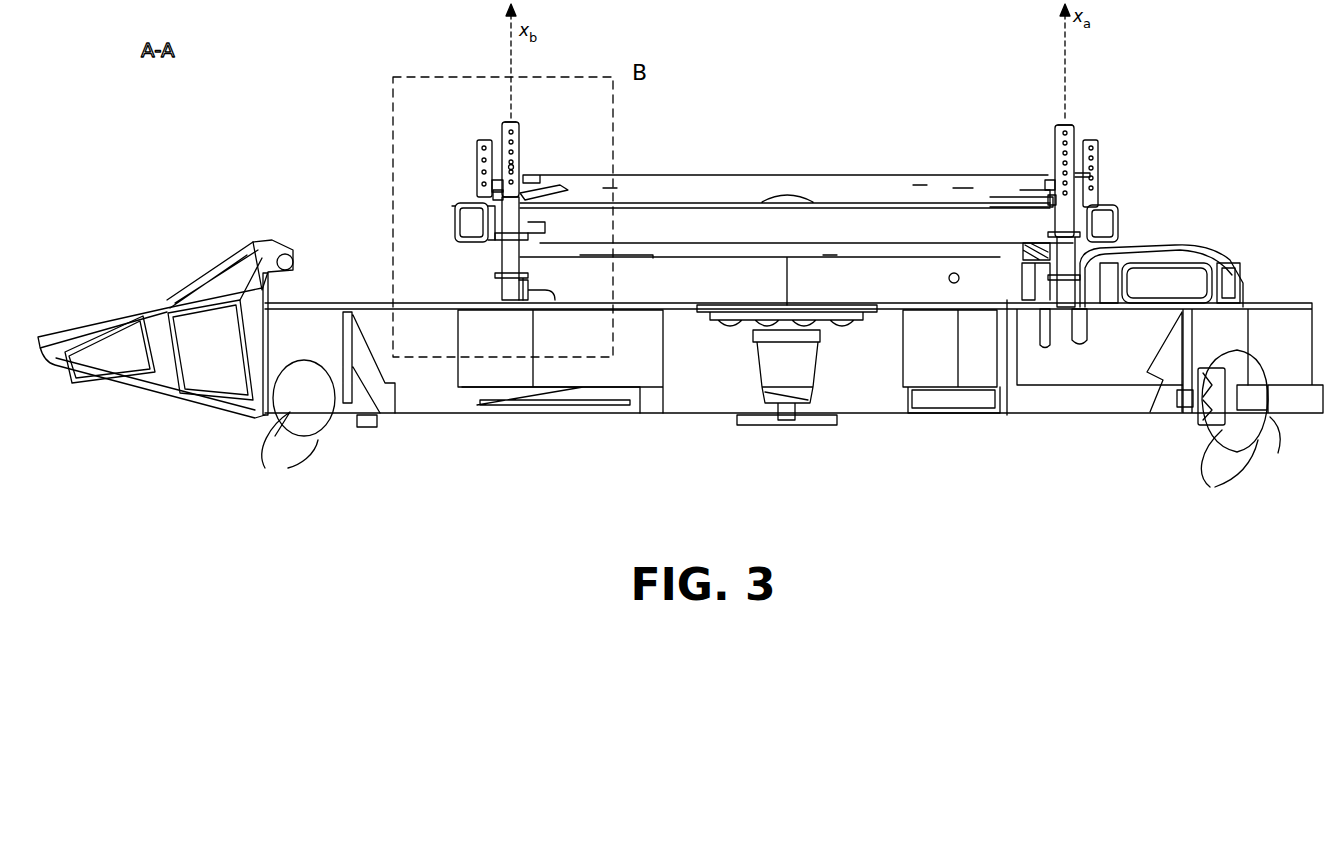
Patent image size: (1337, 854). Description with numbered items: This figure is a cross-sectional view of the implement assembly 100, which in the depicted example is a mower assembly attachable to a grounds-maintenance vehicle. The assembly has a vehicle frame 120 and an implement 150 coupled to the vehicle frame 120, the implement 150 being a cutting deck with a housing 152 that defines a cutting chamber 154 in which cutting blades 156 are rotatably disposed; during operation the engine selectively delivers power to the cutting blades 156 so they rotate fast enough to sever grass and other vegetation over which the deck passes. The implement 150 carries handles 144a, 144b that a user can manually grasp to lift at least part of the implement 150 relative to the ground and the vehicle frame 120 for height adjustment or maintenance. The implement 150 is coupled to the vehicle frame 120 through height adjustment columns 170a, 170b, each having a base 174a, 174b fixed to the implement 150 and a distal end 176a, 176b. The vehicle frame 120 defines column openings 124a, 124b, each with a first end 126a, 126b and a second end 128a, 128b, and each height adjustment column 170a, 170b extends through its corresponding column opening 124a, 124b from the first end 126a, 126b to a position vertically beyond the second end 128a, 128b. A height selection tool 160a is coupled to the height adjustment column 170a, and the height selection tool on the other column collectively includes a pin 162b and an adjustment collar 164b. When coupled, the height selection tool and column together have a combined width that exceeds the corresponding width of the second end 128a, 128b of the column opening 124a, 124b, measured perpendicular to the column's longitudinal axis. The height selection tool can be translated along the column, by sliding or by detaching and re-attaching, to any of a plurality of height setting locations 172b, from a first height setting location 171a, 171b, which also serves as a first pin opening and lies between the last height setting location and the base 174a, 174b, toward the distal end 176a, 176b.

The implement assembly 100 is at (361, 62).
The vehicle frame 120 is at (754, 172).
The column opening 124a is at (1068, 226).
The column opening 124b is at (517, 212).
The first end of column opening 126a is at (1045, 203).
The first end of column opening 126b is at (470, 226).
The second end of column opening 128a is at (1053, 182).
The second end of column opening 128b is at (498, 193).
The handle 144a is at (1175, 263).
The handle 144b is at (340, 240).
The implement 150 is at (1246, 305).
The housing 152 is at (1222, 283).
The cutting chamber 154 is at (690, 392).
The cutting blades 156 is at (610, 392).
The height selection tool 160a is at (1105, 170).
The pin 162b is at (495, 150).
The adjustment collar 164b is at (512, 202).
The height adjustment column 170a is at (1078, 143).
The height adjustment column 170b is at (520, 152).
The first height setting location 171a is at (1060, 200).
The first height setting location 171b is at (497, 182).
The height setting locations 172b is at (521, 169).
The base 174a is at (1045, 303).
The base 174b is at (530, 295).
The distal end 176a is at (1069, 123).
The distal end 176b is at (514, 124).